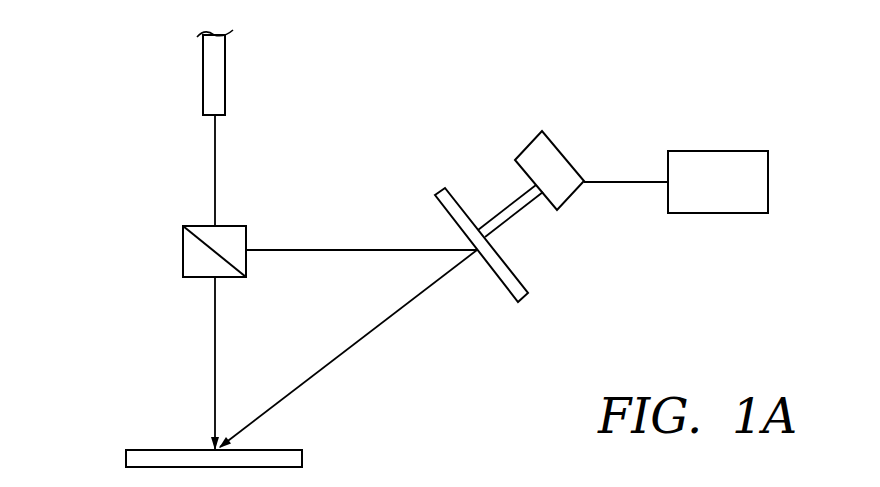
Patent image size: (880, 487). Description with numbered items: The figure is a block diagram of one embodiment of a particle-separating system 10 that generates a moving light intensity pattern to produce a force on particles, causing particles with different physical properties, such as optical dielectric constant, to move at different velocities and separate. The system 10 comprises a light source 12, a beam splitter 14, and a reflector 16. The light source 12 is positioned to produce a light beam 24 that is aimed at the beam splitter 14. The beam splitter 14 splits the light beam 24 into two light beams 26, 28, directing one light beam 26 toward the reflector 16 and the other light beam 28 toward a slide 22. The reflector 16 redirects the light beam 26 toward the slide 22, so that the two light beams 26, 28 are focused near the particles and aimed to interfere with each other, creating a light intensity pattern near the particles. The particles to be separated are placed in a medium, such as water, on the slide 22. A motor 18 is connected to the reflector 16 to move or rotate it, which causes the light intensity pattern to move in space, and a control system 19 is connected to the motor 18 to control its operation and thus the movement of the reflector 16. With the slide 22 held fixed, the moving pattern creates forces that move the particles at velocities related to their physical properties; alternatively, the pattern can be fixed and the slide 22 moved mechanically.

The system 10 is at (140, 159).
The light source 12 is at (226, 83).
The beam splitter 14 is at (182, 250).
The reflector 16 is at (516, 273).
The motor 18 is at (562, 148).
The control system 19 is at (714, 151).
The slide 22 is at (303, 455).
The light beam 24 is at (216, 165).
The light beam 26 is at (352, 249).
The light beam 28 is at (216, 330).